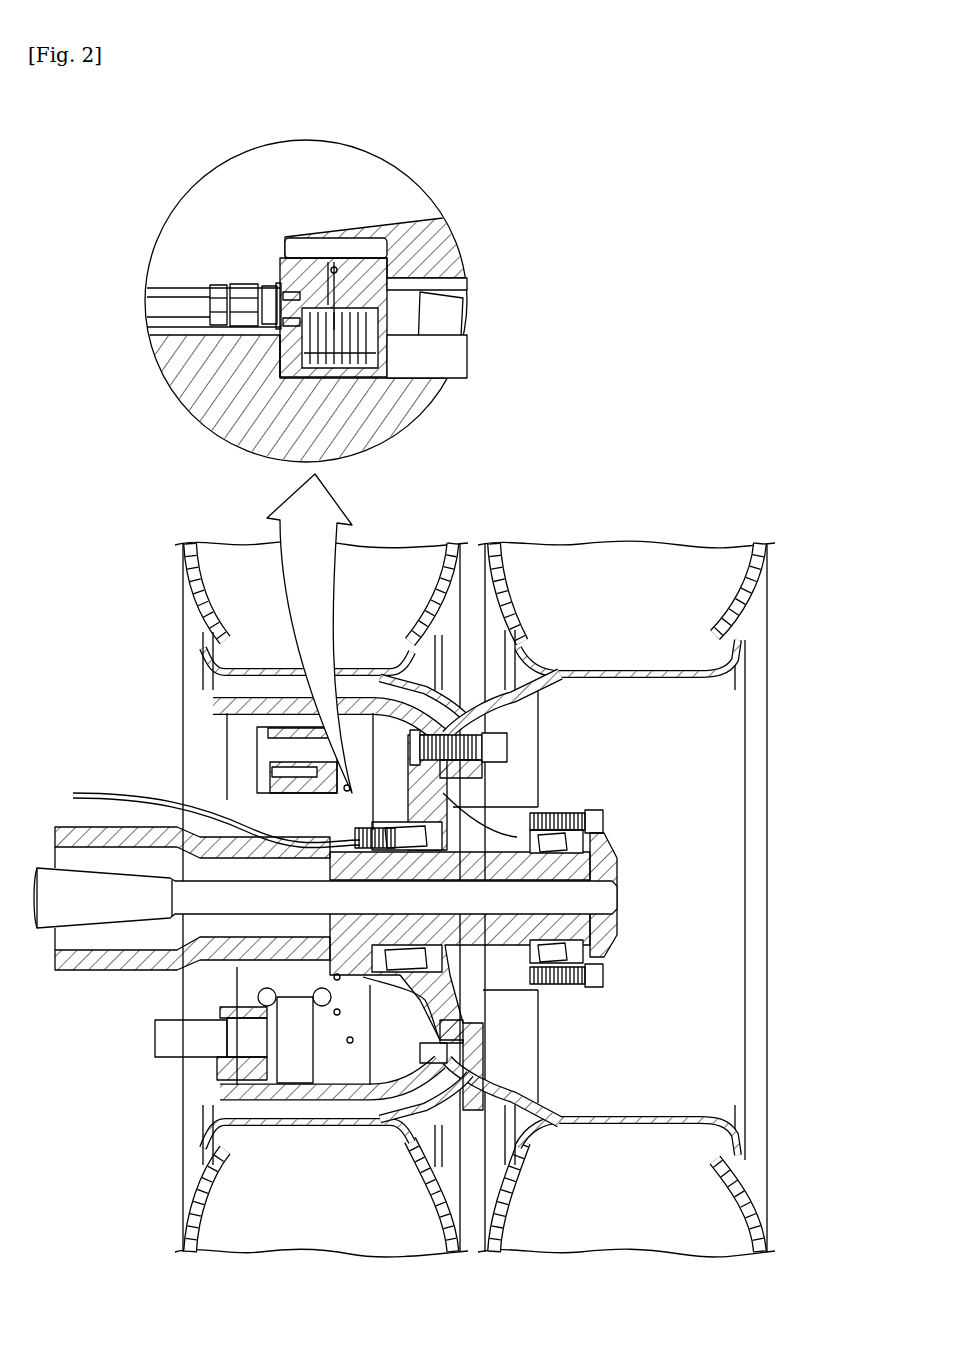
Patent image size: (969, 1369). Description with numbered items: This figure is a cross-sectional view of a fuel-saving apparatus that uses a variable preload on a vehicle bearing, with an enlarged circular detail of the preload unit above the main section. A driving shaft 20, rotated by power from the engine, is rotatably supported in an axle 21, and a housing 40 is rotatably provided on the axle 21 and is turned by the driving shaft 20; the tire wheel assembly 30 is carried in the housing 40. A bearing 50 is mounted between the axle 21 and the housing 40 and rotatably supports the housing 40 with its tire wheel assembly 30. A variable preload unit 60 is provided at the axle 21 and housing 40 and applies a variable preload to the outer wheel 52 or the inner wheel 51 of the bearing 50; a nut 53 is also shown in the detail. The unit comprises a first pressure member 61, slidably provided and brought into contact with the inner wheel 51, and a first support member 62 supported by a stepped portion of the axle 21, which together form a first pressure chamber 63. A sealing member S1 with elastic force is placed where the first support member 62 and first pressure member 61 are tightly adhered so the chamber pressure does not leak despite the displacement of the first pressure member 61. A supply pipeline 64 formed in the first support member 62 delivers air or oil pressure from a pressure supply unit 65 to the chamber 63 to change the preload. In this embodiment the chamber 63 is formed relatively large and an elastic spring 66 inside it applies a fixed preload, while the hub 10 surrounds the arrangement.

The wheel hub 10 is at (378, 196).
The driving shaft 20 is at (82, 915).
The axle 21 is at (131, 960).
The tire wheel assembly 30 is at (160, 1184).
The housing 40 is at (518, 1182).
The bearing 50 is at (462, 735).
The inner wheel 51 is at (412, 372).
The outer wheel 52 is at (443, 290).
The nut 53 is at (455, 323).
The variable preload unit 60 is at (275, 340).
The first pressure member 61 is at (340, 258).
The first support member 62 is at (278, 262).
The first pressure chamber 63 is at (333, 268).
The supply pipeline 64 is at (258, 358).
The pressure supply unit 65 is at (190, 337).
The elastic spring 66 is at (357, 330).
The sealing member S1 is at (330, 300).